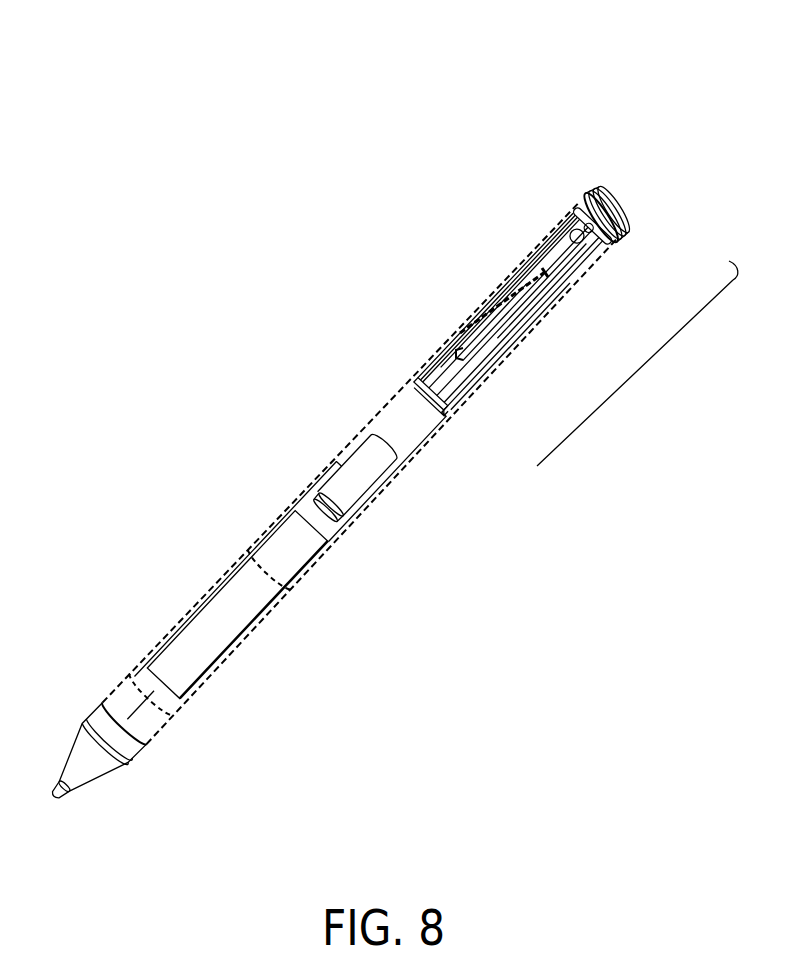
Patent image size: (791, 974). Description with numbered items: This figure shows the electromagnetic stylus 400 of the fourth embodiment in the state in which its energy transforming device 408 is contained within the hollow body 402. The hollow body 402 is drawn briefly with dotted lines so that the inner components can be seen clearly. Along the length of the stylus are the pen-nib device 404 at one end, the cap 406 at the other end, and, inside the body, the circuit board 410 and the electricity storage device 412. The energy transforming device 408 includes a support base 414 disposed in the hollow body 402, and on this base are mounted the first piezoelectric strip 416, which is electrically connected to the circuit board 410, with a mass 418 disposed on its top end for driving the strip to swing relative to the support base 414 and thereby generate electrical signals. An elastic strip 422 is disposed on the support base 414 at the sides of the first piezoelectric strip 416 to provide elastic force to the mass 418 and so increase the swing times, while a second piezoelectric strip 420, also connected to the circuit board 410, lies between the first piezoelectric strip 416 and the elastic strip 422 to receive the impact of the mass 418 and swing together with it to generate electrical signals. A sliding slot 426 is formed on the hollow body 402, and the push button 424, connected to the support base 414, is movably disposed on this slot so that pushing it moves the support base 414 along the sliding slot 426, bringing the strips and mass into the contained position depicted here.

The electromagnetic stylus 400 is at (388, 88).
The hollow body 402 is at (430, 365).
The pen-nib device 404 is at (95, 770).
The cap 406 is at (612, 197).
The energy transforming device 408 is at (655, 366).
The circuit board 410 is at (230, 623).
The electricity storage device 412 is at (367, 482).
The support base 414 is at (447, 418).
The first piezoelectric strip 416 is at (557, 275).
The mass 418 is at (603, 240).
The second piezoelectric strip 420 is at (581, 252).
The elastic strip 422 is at (598, 246).
The push button 424 is at (514, 360).
The sliding slot 426 is at (532, 273).